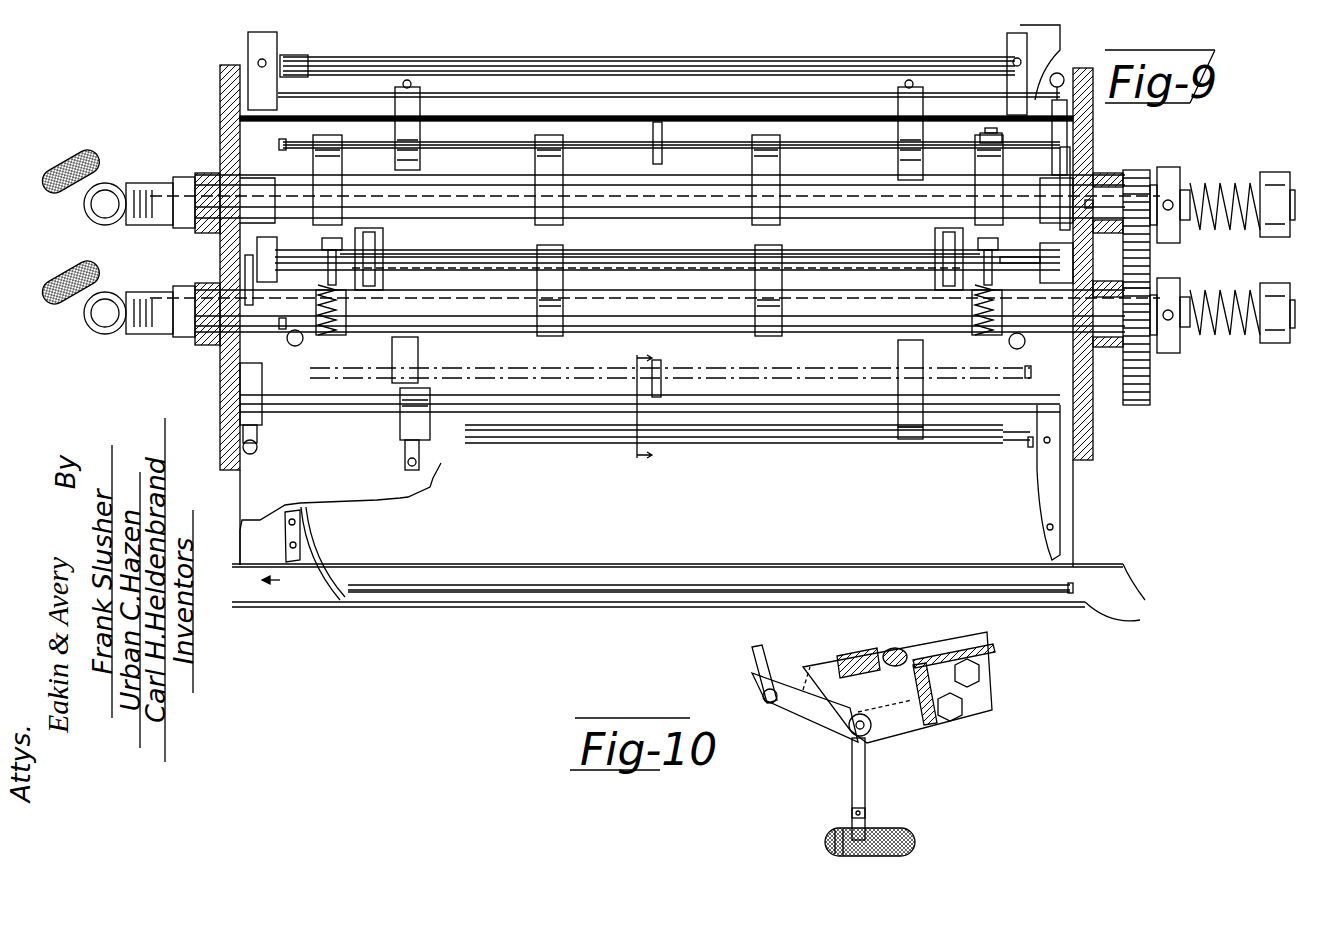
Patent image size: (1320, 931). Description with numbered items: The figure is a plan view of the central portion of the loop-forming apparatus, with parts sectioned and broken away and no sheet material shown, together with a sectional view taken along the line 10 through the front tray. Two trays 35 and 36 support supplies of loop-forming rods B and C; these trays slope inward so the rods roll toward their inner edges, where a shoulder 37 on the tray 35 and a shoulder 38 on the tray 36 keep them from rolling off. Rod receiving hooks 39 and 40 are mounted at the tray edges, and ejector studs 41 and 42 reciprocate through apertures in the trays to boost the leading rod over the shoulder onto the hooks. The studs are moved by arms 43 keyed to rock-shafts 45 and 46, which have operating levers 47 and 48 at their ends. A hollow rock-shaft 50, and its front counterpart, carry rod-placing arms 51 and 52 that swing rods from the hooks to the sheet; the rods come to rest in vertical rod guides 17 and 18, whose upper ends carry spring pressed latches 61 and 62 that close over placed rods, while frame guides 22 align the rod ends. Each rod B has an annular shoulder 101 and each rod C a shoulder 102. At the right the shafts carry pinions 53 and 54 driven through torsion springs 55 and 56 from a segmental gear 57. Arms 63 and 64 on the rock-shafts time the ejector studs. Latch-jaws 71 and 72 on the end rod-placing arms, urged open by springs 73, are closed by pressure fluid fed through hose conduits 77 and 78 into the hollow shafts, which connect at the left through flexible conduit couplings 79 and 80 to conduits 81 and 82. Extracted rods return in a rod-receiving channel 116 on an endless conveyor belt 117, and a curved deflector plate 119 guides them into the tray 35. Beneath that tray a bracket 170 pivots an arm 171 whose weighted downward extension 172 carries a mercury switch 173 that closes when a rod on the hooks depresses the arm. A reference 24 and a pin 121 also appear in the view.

In FIG. 9, the section line 10 is at (622, 405).
In FIG. 9, the vertical rod guides 17 is at (383, 272).
In FIG. 9, the vertical rod guides 18 is at (383, 245).
In FIG. 9, the guides 22 is at (257, 250).
In FIG. 9, the rod 24 is at (1000, 258).
In FIG. 9, the tray 35 is at (1010, 515).
In FIG. 10, the tray 35 is at (932, 655).
In FIG. 9, the tray 36 is at (488, 84).
In FIG. 9, the shoulder 37 is at (755, 420).
In FIG. 10, the shoulder 37 is at (858, 656).
In FIG. 9, the shoulder 38 is at (598, 100).
In FIG. 9, the rod receiving hooks 39 is at (418, 365).
In FIG. 10, the rod receiving hooks 39 is at (795, 672).
In FIG. 9, the rod receiving hooks 40 is at (412, 100).
In FIG. 9, the ejector studs 41 is at (403, 448).
In FIG. 9, the ejector studs 42 is at (406, 80).
In FIG. 9, the arms 43 is at (400, 415).
In FIG. 9, the rock-shaft 45 is at (318, 412).
In FIG. 9, the rock-shaft 46 is at (1000, 80).
In FIG. 9, the operating lever 47 is at (240, 386).
In FIG. 9, the operating lever 48 is at (1067, 130).
In FIG. 9, the rock-shaft 50 is at (680, 198).
In FIG. 9, the rod-placing arms 51 is at (537, 275).
In FIG. 9, the rod-placing arms 52 is at (342, 178).
In FIG. 9, the pinion 53 is at (1175, 300).
In FIG. 9, the pinion 54 is at (1145, 168).
In FIG. 9, the torsion spring 55 is at (1240, 292).
In FIG. 9, the torsion spring 56 is at (1225, 185).
In FIG. 9, the segmental gear 57 is at (1152, 398).
In FIG. 9, the spring pressed latches 61 is at (660, 271).
In FIG. 9, the spring pressed latches 62 is at (945, 256).
In FIG. 9, the arm 63 is at (245, 270).
In FIG. 9, the arm 64 is at (1070, 175).
In FIG. 9, the latch-jaws 71 is at (322, 244).
In FIG. 9, the latch-jaws 72 is at (990, 130).
In FIG. 9, the springs 73 is at (325, 335).
In FIG. 9, the hose conduit 77 is at (1040, 350).
In FIG. 9, the hose conduit 78 is at (278, 213).
In FIG. 9, the flexible conduit coupling 79 is at (90, 325).
In FIG. 9, the flexible conduit coupling 80 is at (135, 183).
In FIG. 9, the conduit 81 is at (62, 296).
In FIG. 9, the conduit 82 is at (82, 165).
In FIG. 9, the annular shoulder 101 is at (1072, 583).
In FIG. 9, the annular shoulder 102 is at (298, 130).
In FIG. 9, the rod-receiving channel 116 is at (705, 613).
In FIG. 9, the endless conveyor belt 117 is at (1130, 582).
In FIG. 9, the curved deflector plate 119 is at (318, 555).
In FIG. 9, the pin 121 is at (664, 372).
In FIG. 10, the bracket 170 is at (900, 728).
In FIG. 10, the arm 171 is at (820, 705).
In FIG. 10, the downward extension 172 is at (850, 768).
In FIG. 10, the mercury switch 173 is at (838, 828).
In FIG. 9, the loop-forming rods B is at (548, 586).
In FIG. 10, the loop-forming rods B is at (897, 648).
In FIG. 9, the loop-forming rods C is at (515, 142).